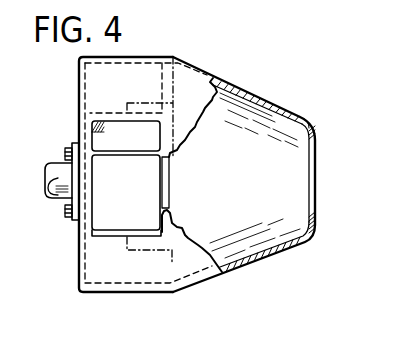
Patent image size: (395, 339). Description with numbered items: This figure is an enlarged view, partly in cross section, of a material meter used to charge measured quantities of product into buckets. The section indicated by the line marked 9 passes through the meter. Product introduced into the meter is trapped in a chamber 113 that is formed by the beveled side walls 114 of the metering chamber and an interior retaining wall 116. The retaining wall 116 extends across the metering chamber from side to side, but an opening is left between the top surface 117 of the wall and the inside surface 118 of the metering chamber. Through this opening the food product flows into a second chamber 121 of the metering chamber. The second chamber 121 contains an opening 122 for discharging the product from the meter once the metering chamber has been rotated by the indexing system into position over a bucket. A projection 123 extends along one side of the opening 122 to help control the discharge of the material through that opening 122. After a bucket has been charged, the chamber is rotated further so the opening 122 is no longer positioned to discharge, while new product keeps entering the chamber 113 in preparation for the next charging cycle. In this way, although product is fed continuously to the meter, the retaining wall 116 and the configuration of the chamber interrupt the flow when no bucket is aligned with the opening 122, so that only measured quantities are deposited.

The section line 9- 9 is at (173, 57).
The chamber 113 is at (292, 197).
The beveled side walls 114 is at (250, 92).
The interior retaining wall 116 is at (170, 178).
The top surface 117 is at (169, 196).
The inside surface 118 is at (294, 110).
The second chamber 121 is at (110, 258).
The opening 122 is at (132, 186).
The projection 123 is at (143, 147).